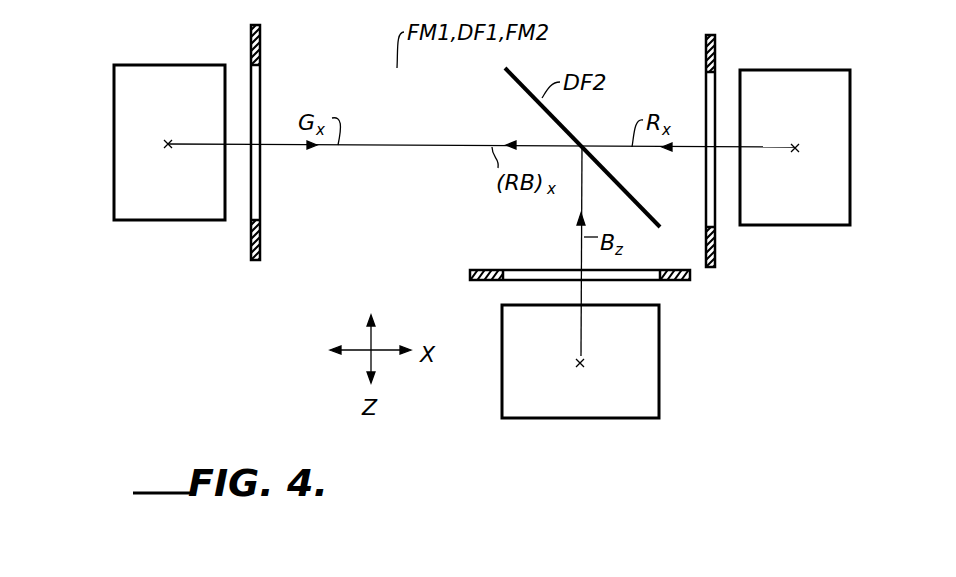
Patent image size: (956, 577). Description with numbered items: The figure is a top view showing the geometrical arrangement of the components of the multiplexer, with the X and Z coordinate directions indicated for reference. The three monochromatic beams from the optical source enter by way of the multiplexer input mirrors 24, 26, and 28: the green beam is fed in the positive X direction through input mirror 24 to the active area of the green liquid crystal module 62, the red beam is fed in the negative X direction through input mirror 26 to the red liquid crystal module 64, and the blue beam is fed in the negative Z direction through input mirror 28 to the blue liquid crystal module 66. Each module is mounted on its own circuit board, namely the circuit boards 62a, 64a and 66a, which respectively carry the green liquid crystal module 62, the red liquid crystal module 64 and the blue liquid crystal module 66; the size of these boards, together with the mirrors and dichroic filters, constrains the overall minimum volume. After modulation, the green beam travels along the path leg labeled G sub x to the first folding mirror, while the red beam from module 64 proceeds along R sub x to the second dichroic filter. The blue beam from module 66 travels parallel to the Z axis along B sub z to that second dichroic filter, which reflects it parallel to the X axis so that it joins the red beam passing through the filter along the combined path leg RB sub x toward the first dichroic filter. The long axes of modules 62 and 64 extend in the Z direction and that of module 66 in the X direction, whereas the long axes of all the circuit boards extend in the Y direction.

The multiplexer input mirror 24 is at (133, 221).
The multiplexer input mirror 26 is at (803, 226).
The multiplexer input mirror 28 is at (660, 376).
The green liquid crystal module 62 is at (260, 77).
The circuit board 62a is at (260, 246).
The red liquid crystal module 64 is at (706, 87).
The circuit board 64a is at (716, 250).
The blue liquid crystal module 66 is at (534, 270).
The circuit board 66a is at (680, 281).